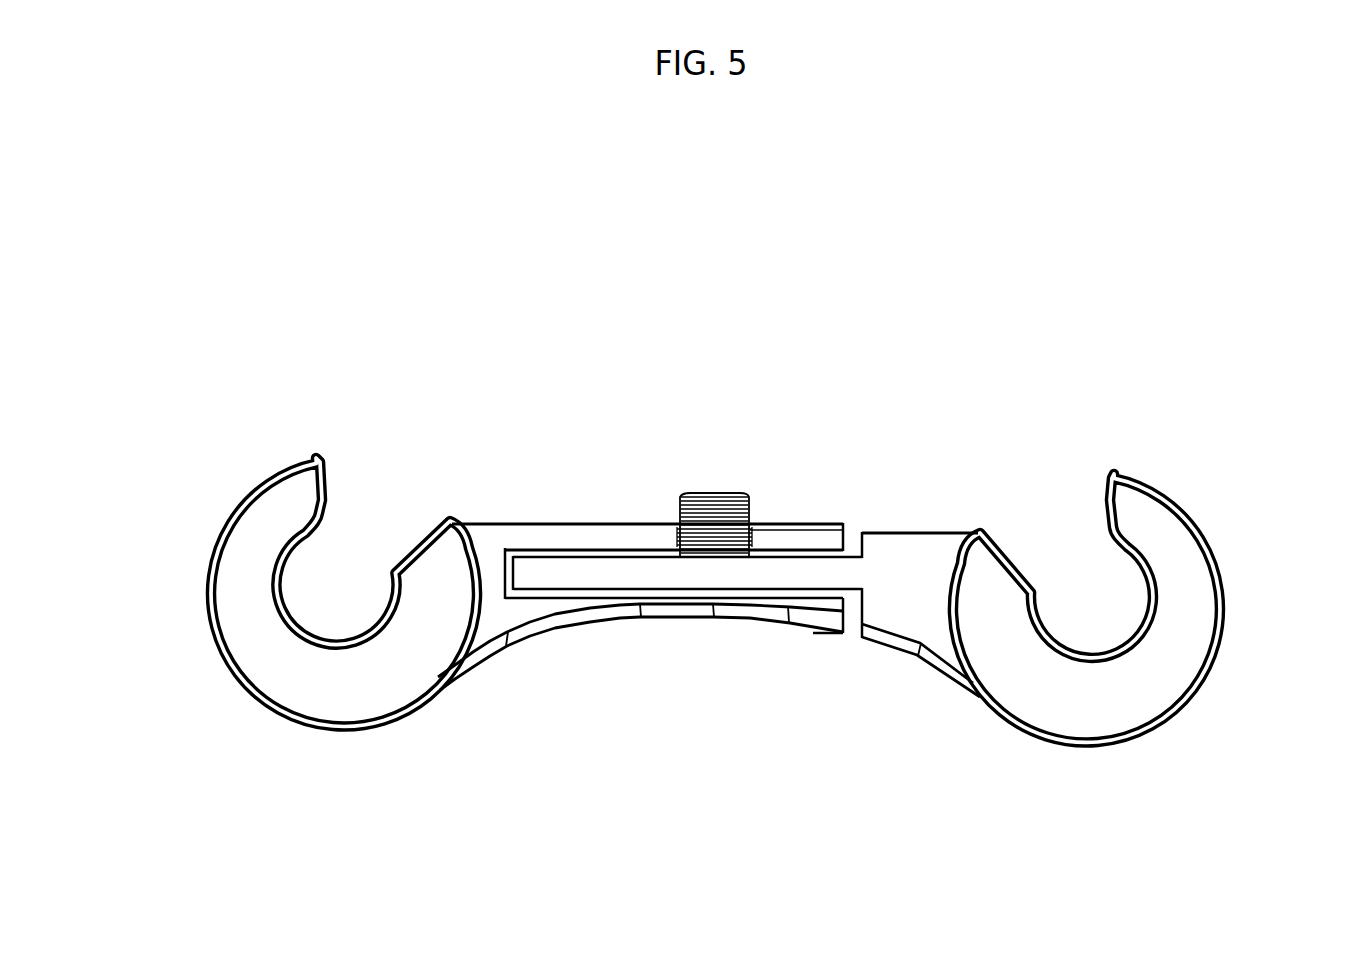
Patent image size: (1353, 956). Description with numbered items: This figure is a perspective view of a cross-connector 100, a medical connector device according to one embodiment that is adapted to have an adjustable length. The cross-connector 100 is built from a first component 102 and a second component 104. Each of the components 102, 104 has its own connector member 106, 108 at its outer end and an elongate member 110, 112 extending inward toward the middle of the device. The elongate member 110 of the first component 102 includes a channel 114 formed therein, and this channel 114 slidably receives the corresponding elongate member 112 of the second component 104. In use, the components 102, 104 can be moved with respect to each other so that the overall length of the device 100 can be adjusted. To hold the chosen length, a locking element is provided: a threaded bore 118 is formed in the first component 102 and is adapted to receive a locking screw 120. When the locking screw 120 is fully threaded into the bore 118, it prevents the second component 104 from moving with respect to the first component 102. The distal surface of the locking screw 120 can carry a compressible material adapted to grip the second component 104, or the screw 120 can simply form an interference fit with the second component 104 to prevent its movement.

The cross-connector 100 is at (260, 249).
The first component 102 is at (178, 473).
The second component 104 is at (1220, 500).
The connector member 106 is at (344, 635).
The connector member 108 is at (1086, 651).
The elongate member 110 is at (487, 547).
The elongate member 112 is at (910, 558).
The channel 114 is at (548, 592).
The threaded bore 118 is at (659, 538).
The locking screw 120 is at (742, 508).